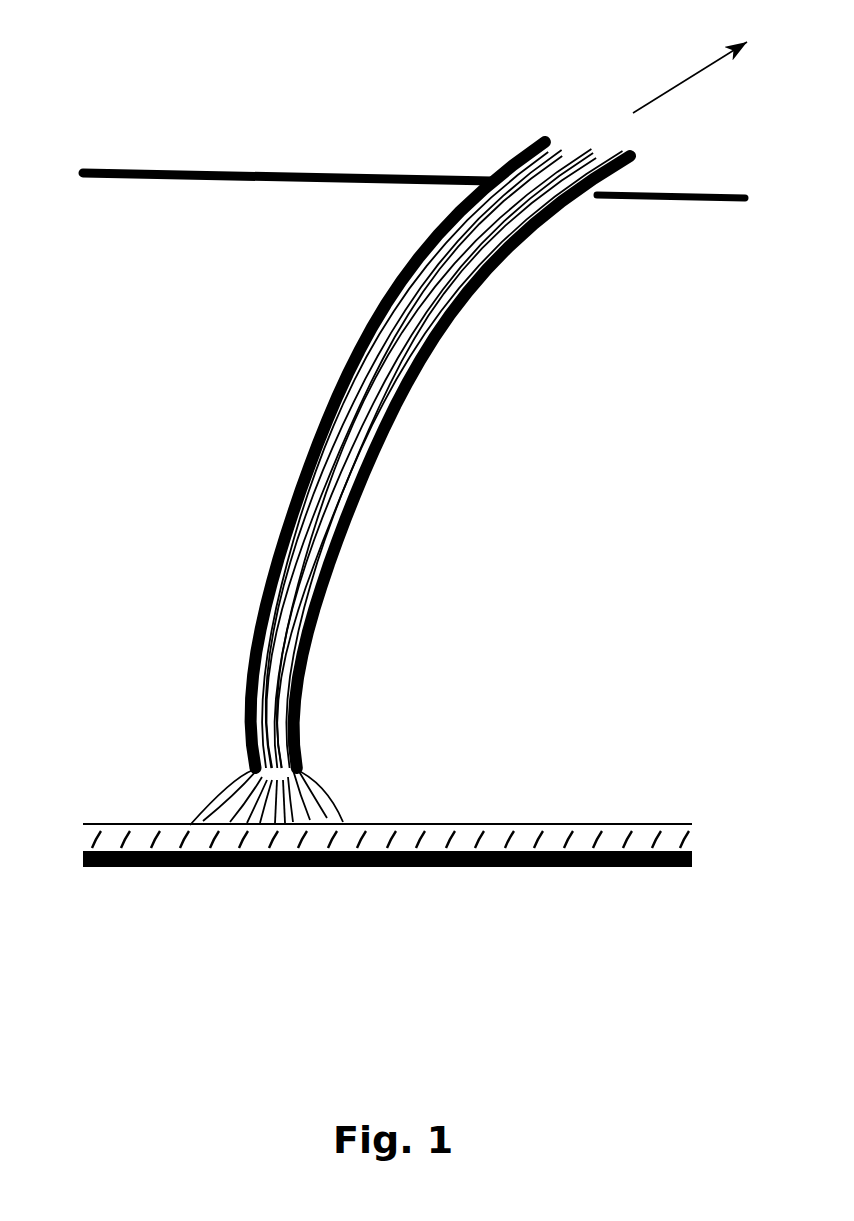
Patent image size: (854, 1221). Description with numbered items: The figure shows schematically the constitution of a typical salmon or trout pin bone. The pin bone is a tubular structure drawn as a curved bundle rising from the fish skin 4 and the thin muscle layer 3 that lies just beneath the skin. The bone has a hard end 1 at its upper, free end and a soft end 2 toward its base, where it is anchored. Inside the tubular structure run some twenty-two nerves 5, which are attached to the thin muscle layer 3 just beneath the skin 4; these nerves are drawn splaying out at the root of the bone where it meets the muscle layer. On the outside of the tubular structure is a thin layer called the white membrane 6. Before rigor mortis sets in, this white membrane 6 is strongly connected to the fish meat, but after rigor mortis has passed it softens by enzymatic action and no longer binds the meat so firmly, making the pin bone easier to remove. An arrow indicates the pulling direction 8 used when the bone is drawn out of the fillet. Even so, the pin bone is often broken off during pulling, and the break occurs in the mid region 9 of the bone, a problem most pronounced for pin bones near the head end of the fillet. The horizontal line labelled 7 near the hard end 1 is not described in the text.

The hard end 1 is at (411, 455).
The soft end 2 is at (307, 668).
The thin muscle layer 3 is at (442, 817).
The skin 4 is at (523, 867).
The nerves 5 is at (220, 780).
The white membrane 6 is at (330, 400).
The surface to be cleaned 7 is at (293, 168).
The pulling direction 8 is at (669, 86).
The mid region 9 is at (357, 492).